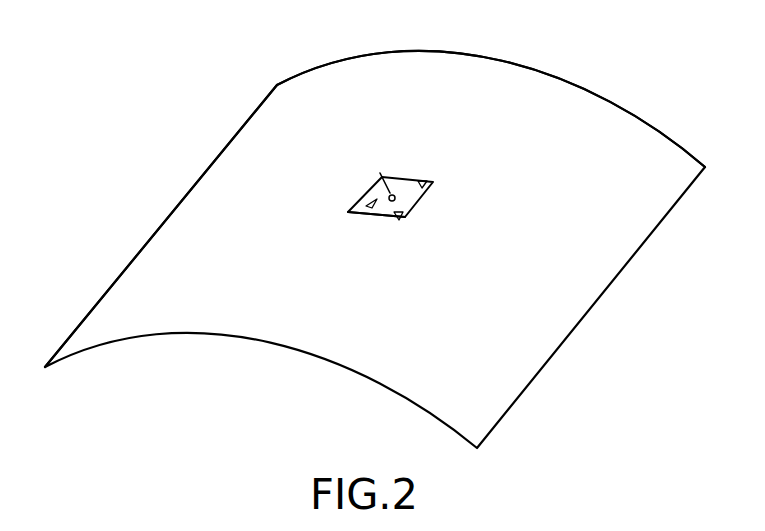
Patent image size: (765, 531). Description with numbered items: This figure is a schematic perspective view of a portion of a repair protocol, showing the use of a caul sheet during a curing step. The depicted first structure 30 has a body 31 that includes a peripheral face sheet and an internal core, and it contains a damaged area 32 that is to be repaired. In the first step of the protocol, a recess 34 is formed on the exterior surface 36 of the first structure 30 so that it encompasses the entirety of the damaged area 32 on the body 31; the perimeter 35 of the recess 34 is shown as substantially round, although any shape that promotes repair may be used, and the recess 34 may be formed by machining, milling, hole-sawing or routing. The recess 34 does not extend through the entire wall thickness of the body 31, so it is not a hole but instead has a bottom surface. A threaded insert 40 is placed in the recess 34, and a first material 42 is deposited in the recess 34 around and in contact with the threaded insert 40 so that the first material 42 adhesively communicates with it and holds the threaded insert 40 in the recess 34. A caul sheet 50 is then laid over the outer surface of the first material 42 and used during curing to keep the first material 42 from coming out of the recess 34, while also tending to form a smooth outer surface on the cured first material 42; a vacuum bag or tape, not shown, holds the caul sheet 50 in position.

The first structure 30 is at (184, 94).
The body 31 is at (577, 327).
The damaged area 32 is at (408, 190).
The recess 34 is at (438, 176).
The perimeter 35 is at (398, 217).
The exterior surface 36 is at (197, 213).
The threaded insert 40 is at (380, 173).
The first material 42 is at (373, 200).
The caul sheet 50 is at (405, 217).